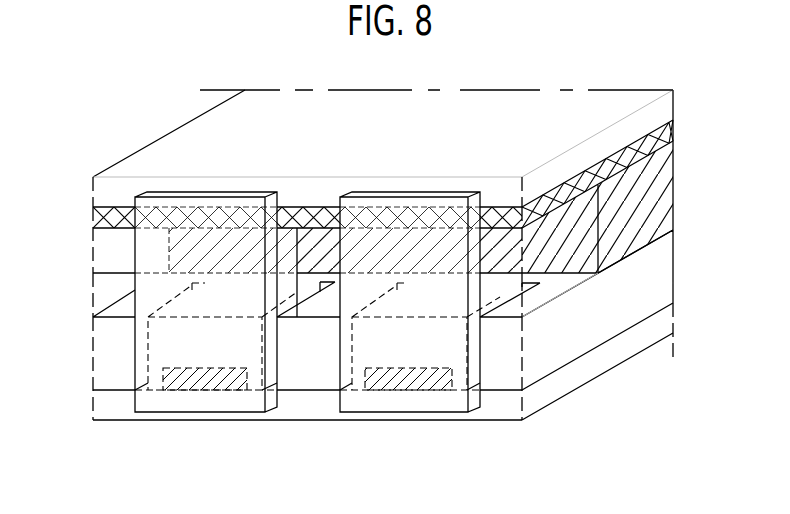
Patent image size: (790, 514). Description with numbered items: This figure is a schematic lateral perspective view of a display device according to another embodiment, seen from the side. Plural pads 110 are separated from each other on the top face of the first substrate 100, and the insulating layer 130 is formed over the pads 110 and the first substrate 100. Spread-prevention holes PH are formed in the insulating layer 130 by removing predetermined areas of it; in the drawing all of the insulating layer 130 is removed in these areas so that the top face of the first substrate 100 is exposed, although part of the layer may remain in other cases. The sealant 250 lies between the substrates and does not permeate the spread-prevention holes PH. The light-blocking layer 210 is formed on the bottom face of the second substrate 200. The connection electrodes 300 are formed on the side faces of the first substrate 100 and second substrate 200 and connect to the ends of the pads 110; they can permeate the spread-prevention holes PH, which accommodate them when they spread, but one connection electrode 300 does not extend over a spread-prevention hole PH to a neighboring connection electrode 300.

The second substrate 200 is at (660, 112).
The light-blocking layer 210 is at (673, 137).
The sealant 250 is at (660, 192).
The insulating layer 130 is at (660, 258).
The first substrate 100 is at (660, 333).
The connection electrode 300 is at (148, 248).
The spread-prevention hole PH is at (268, 345).
The pad 110 is at (392, 380).